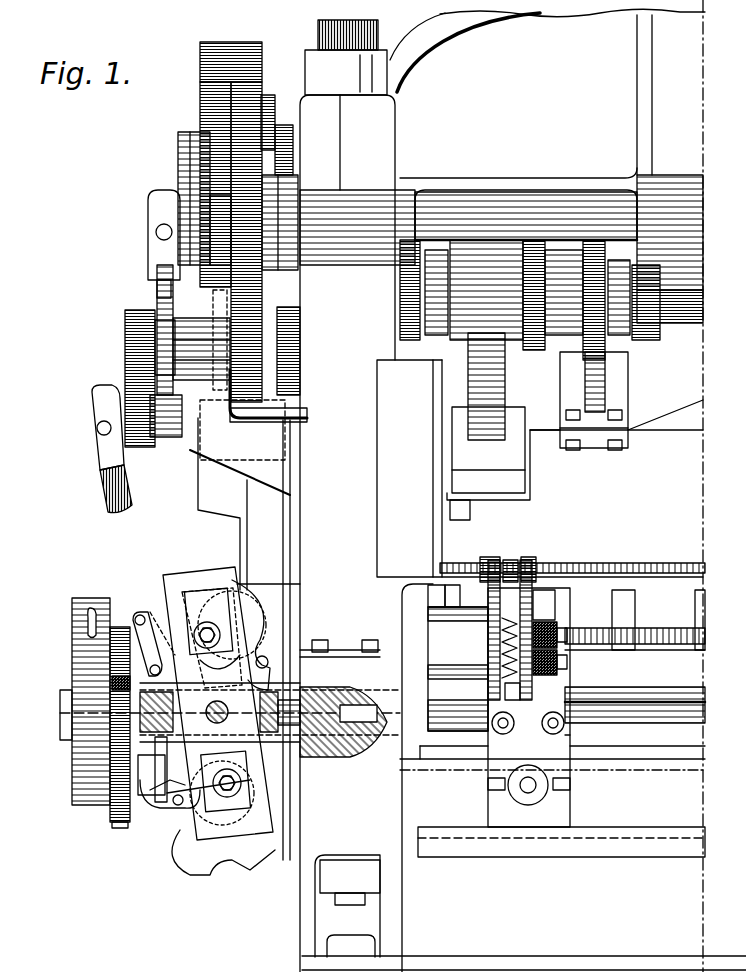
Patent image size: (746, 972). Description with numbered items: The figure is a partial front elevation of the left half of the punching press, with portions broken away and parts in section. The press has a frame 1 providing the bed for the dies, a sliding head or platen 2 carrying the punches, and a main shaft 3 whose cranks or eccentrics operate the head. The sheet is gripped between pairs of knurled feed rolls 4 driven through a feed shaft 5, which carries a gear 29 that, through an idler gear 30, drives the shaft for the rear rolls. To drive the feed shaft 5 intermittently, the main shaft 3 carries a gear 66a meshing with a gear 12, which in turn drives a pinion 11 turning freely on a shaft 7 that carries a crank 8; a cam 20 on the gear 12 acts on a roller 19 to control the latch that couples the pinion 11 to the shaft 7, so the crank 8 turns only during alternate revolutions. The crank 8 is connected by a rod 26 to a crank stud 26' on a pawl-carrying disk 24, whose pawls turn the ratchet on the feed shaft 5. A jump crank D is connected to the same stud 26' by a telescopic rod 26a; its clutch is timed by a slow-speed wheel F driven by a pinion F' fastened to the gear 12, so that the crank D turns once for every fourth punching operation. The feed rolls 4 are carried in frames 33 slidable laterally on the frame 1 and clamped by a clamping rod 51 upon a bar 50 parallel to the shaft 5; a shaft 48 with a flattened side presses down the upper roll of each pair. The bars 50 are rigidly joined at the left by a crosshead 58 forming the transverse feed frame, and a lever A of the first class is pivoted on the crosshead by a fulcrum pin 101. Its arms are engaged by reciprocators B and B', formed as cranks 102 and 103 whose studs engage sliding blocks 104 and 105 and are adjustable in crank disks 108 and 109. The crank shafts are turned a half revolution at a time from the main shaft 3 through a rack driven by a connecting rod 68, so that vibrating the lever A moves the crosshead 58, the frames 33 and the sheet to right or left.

The frame 1 is at (491, 486).
The sliding head or platen 2 is at (568, 543).
The main shaft 3 is at (670, 298).
The knurled feed rolls 4 is at (546, 623).
The feed shaft 5 is at (648, 698).
The shaft 7 is at (513, 215).
The crank 8 is at (180, 168).
The pinion 11 is at (232, 260).
The gear 12 is at (245, 46).
The roller 19 is at (276, 128).
The cam 20 is at (265, 94).
The disk 24 is at (80, 738).
The rod 26 is at (166, 438).
The rod 26a is at (100, 486).
The crank stud 26' is at (86, 672).
The gear 29 is at (118, 625).
The idler gear 30 is at (120, 822).
The frame 33 is at (566, 806).
The shaft 48 is at (632, 566).
The bar 50 is at (640, 726).
The clamping rod 51 is at (566, 722).
The crosshead 58 is at (148, 767).
The gear 66a is at (281, 339).
The connecting rod 68 is at (222, 301).
The fulcrum pin 101 is at (215, 720).
The crank 102 is at (207, 588).
The crank 103 is at (215, 828).
The sliding block 104 is at (230, 636).
The sliding block 105 is at (245, 823).
The crank disk 108 is at (262, 590).
The crank disk 109 is at (232, 838).
The lever A is at (172, 583).
The reciprocator B is at (202, 618).
The reciprocator B' is at (260, 724).
The jump crank D is at (126, 363).
The slow-speed wheel F is at (201, 176).
The pinion F' is at (206, 242).